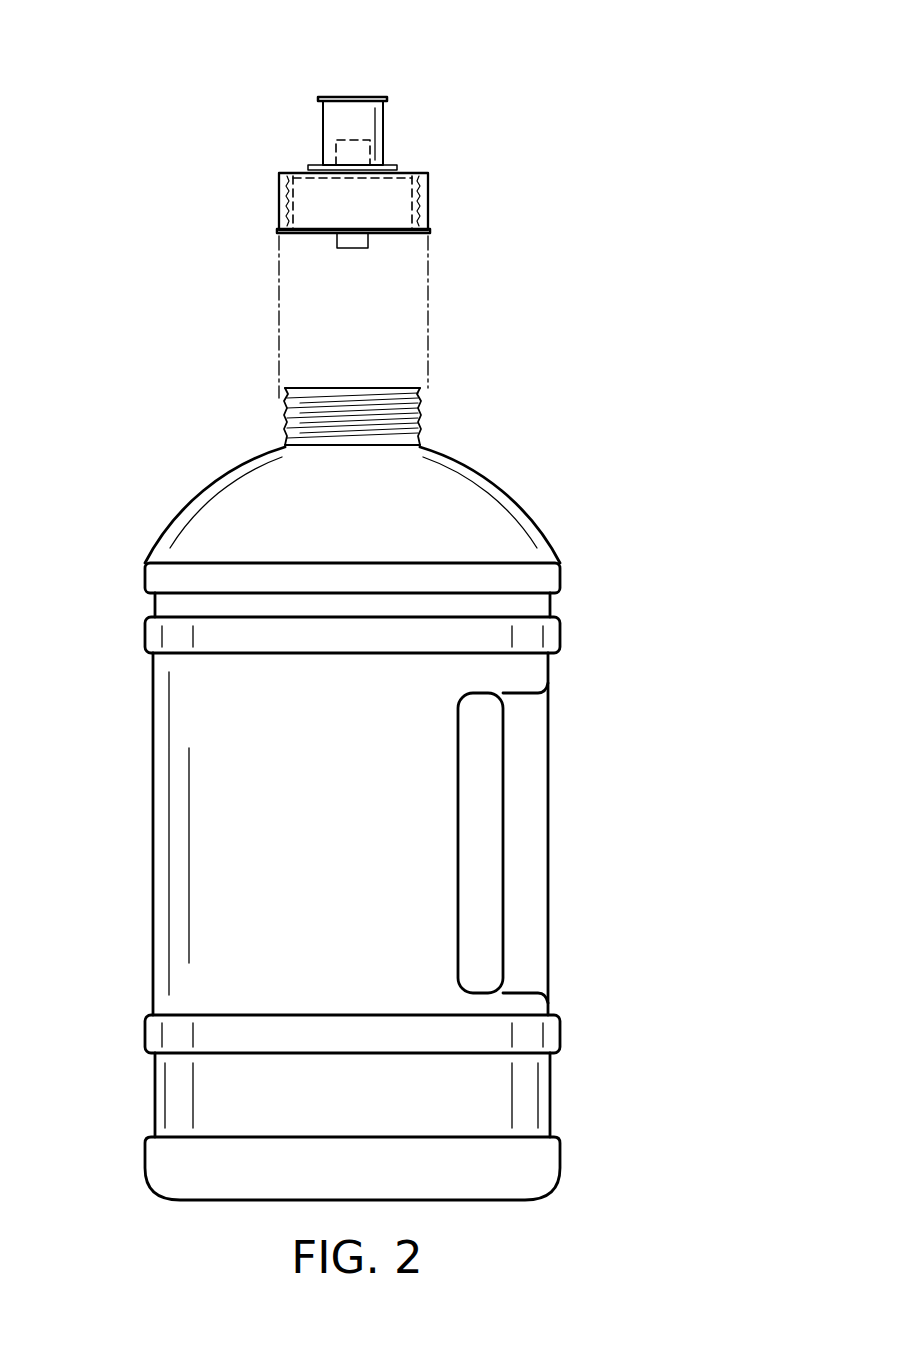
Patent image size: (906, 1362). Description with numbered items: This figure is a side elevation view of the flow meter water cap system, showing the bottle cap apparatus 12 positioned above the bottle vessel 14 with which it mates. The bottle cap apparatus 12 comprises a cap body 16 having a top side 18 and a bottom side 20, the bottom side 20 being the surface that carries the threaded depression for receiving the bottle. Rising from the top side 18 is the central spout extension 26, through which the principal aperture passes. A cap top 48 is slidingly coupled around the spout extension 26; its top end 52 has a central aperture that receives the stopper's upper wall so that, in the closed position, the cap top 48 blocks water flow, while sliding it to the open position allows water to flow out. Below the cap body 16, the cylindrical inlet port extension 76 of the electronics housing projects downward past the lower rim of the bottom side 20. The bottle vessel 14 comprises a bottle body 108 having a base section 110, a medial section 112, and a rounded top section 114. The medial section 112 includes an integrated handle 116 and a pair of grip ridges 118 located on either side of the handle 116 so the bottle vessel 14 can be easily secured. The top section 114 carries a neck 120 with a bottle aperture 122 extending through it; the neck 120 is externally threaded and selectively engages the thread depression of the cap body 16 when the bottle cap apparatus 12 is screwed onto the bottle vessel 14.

The bottle cap apparatus 12 is at (383, 204).
The bottle vessel 14 is at (412, 760).
The cap body 16 is at (278, 204).
The top side 18 is at (410, 172).
The bottom side 20 is at (292, 234).
The spout extension 26 is at (330, 166).
The cap top 48 is at (376, 128).
The top end 52 is at (334, 97).
The inlet port extension 76 is at (352, 250).
The bottle body 108 is at (548, 533).
The base section 110 is at (130, 1135).
The medial section 112 is at (355, 866).
The top section 114 is at (358, 532).
The handle 116 is at (540, 832).
The grip ridges 118 is at (546, 1028).
The neck 120 is at (420, 400).
The bottle aperture 122 is at (367, 388).